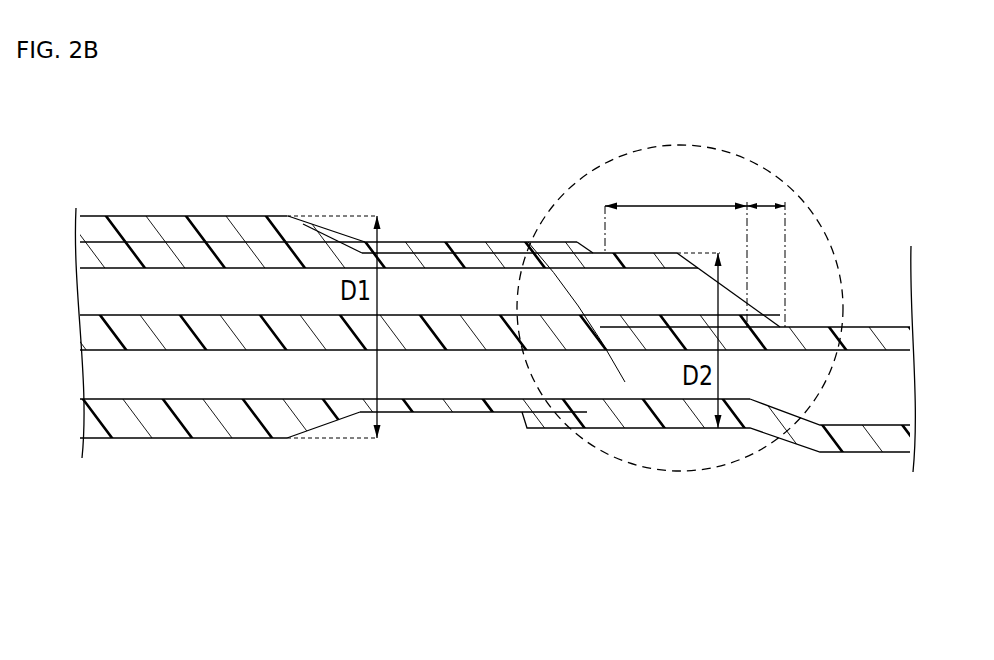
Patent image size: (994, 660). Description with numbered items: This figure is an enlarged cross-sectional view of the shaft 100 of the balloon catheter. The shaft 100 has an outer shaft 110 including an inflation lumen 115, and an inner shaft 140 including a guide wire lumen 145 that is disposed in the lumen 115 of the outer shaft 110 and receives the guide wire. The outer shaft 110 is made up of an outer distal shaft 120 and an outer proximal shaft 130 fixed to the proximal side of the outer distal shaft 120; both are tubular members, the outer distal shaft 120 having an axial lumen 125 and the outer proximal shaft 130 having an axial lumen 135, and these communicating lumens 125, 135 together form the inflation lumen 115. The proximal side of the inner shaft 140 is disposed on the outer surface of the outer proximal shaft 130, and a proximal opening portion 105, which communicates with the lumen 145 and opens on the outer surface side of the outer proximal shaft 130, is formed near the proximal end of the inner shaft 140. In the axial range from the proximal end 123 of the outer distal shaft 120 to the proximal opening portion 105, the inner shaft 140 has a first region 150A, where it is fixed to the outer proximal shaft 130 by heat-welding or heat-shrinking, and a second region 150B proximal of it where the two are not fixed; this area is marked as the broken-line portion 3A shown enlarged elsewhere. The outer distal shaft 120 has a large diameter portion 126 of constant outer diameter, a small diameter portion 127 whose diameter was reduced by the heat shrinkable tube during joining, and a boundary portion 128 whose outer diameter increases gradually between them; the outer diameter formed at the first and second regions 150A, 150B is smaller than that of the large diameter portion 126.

The shaft 100 is at (592, 569).
The proximal opening portion 105 is at (720, 284).
The outer shaft 110 is at (622, 522).
The lumen (inflation lumen) 115 is at (555, 168).
The outer distal shaft 120 is at (525, 405).
The proximal end of the outer distal shaft 123 is at (572, 240).
The lumen 125 is at (440, 373).
The large diameter portion 126 is at (182, 215).
The small diameter portion 127 is at (397, 241).
The boundary portion 128 is at (322, 229).
The outer proximal shaft 130 is at (623, 410).
The lumen 135 is at (528, 242).
The inner shaft 140 is at (498, 338).
The lumen (guide wire lumen) 145 is at (406, 295).
The first region 150A is at (676, 250).
The second region 150B is at (765, 205).
The portion surrounded by the broken line 3A is at (718, 468).